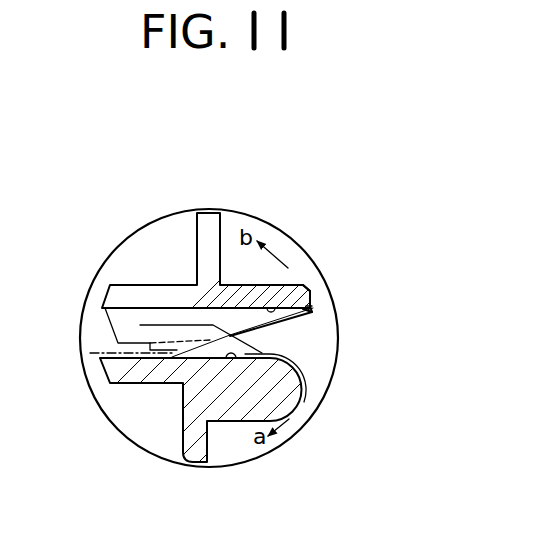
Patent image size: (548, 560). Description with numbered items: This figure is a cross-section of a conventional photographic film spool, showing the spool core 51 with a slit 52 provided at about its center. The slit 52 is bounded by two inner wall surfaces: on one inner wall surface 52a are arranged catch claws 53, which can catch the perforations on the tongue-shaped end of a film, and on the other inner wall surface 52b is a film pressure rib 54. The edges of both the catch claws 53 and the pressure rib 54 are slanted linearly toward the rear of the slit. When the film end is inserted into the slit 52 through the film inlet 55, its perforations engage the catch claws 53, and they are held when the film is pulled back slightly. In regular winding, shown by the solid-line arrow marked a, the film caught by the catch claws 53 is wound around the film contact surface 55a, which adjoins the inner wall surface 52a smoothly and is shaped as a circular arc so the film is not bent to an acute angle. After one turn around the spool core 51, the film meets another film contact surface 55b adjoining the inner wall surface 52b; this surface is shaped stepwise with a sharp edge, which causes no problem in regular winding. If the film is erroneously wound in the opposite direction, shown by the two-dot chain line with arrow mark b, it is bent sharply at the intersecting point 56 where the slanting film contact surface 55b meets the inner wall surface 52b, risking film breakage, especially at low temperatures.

The spool core 51 is at (246, 210).
The slit 52 is at (227, 320).
The inner wall surface 52a is at (230, 358).
The inner wall surface 52b is at (283, 286).
The catch claws 53 is at (145, 332).
The film pressure rib 54 is at (270, 318).
The film inlet 55 is at (300, 328).
The film contact surface 55a is at (304, 399).
The film contact surface 55b is at (310, 292).
The intersecting point 56 is at (313, 306).